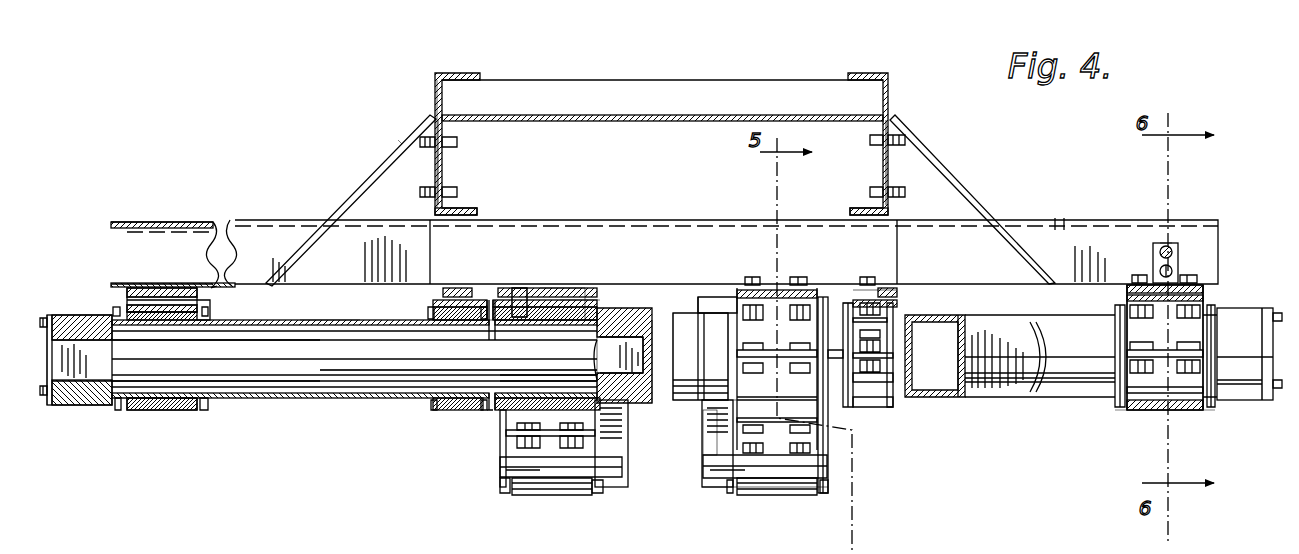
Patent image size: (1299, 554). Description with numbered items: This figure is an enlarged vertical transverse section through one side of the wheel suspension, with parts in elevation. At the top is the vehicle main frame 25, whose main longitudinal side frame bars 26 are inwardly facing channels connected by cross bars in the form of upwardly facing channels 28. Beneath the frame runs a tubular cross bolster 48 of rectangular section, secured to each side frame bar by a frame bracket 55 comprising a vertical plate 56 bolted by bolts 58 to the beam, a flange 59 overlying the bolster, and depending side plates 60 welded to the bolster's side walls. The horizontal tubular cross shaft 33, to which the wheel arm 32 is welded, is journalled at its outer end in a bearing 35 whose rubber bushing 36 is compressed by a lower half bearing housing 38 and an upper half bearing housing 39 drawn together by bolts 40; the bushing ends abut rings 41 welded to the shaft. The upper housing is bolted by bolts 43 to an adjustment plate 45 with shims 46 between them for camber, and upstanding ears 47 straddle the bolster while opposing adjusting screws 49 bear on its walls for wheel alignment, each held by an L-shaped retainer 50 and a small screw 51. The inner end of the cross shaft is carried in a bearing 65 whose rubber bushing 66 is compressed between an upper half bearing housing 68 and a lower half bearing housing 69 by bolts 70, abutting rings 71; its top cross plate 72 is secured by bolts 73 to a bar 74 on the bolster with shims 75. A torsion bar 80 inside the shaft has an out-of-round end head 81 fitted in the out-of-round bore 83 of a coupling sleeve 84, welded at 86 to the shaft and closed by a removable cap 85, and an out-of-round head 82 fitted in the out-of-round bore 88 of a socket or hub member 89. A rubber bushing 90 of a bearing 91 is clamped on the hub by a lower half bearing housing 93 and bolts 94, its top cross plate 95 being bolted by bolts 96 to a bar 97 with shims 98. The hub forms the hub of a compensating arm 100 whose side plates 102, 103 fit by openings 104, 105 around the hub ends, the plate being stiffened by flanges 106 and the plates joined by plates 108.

The main frame 25 is at (428, 70).
The main longitudinal side frame bars 26 is at (434, 80).
The upwardly facing channels 28 is at (646, 88).
The arm 32 is at (963, 398).
The tubular cross shaft 33 is at (328, 400).
The bearing 35 is at (160, 450).
The rubber bushing 36 is at (172, 412).
The lower half bearing housing 38 is at (136, 412).
The upper half bearing housing 39 is at (154, 288).
The bolts 40 is at (1182, 374).
The rings 41 is at (56, 408).
The bolts 43 is at (1182, 318).
The adjustment plate 45 is at (186, 290).
The shims 46 is at (210, 305).
The upstanding ears 47 is at (1178, 270).
The tubular cross bolster 48 is at (1052, 227).
The adjusting screws 49 is at (1154, 263).
The L-shaped retainer 50 is at (1180, 256).
The small screw 51 is at (1158, 244).
The frame bracket 55 is at (398, 140).
The vertical plate 56 is at (434, 172).
The bolts 58 is at (458, 192).
The flange 59 is at (464, 217).
The depending side plates 60 is at (372, 198).
The bearing 65 is at (448, 444).
The rubber bushing 66 is at (456, 412).
The upper half bearing housing 68 is at (460, 328).
The lower half bearing housing 69 is at (444, 410).
The bolts 70 is at (880, 350).
The rings 71 is at (430, 408).
The top cross plate 72 is at (890, 303).
The bolts 73 is at (874, 274).
The bar 74 is at (468, 286).
The shims 75 is at (442, 301).
The torsion bar 80 is at (332, 327).
The out-of-round end head 81 is at (104, 347).
The out-of-round head 82 is at (608, 354).
The out-of-round bore 83 is at (106, 314).
The coupling sleeve 84 is at (64, 410).
The removable cap 85 is at (49, 314).
The weld 86 is at (114, 310).
The out-of-round bore 88 is at (590, 364).
The socket or hub member 89 is at (676, 308).
The rubber bushing 90 is at (558, 288).
The bearing 91 is at (577, 284).
The lower half bearing housing 93 is at (752, 402).
The bolts 94 is at (792, 310).
The top cross plate 95 is at (520, 287).
The bolts 96 is at (792, 282).
The bar 97 is at (592, 288).
The shims 98 is at (724, 286).
The compensating arm 100 is at (707, 438).
The side plate 102 is at (503, 494).
The side plate 103 is at (604, 494).
The opening 104 is at (494, 331).
The opening 105 is at (528, 342).
The flanges 106 is at (658, 278).
The plates 108 is at (706, 472).